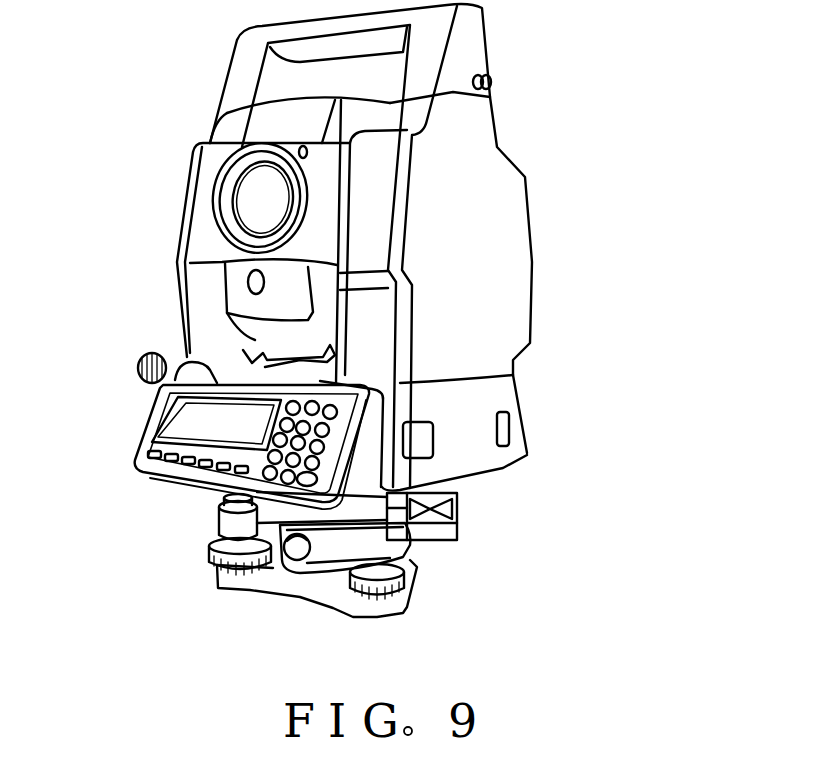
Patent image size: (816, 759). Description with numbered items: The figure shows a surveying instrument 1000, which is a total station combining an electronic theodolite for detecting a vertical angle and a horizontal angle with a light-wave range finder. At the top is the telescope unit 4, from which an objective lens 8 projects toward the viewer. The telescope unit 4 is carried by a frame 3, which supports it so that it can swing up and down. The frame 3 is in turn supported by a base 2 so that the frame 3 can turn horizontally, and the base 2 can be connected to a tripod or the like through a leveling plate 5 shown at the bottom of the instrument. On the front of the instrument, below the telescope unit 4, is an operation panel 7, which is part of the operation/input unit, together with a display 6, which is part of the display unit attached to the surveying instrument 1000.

The surveying instrument 1000 is at (196, 589).
The base 2 is at (462, 525).
The frame 3 is at (523, 165).
The telescope unit 4 is at (270, 125).
The leveling plate 5 is at (217, 552).
The display 6 is at (197, 412).
The operation panel 7 is at (147, 448).
The objective lens 8 is at (227, 202).